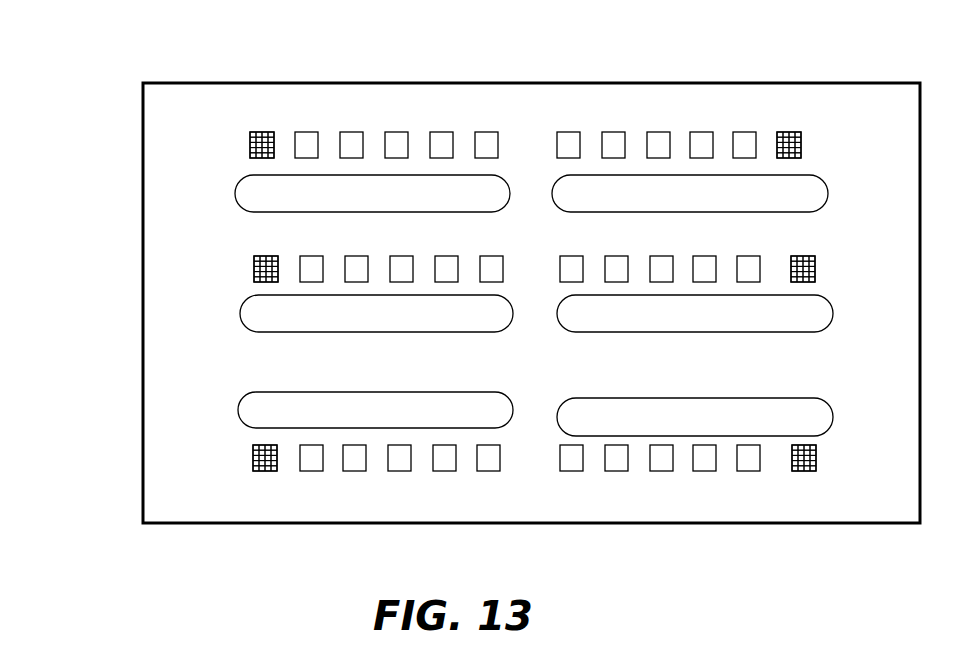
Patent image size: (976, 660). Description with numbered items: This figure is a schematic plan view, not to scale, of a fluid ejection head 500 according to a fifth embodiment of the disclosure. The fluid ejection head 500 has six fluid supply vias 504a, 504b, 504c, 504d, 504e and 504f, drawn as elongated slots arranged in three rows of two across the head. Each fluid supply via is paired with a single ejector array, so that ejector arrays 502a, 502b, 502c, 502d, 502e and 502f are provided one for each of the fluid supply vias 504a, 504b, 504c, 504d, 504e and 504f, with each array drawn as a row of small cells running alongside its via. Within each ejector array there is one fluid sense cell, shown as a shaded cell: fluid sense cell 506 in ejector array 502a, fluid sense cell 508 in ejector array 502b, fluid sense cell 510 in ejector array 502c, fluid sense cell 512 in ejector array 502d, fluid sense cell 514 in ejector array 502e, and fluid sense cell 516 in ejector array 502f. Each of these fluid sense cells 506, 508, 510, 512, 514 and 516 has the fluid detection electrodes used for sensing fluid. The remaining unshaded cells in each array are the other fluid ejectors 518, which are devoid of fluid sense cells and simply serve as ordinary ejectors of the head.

The fluid ejection head 500 is at (102, 106).
The ejector array 502a is at (240, 141).
The ejector array 502b is at (814, 144).
The ejector array 502c is at (243, 269).
The ejector array 502d is at (828, 269).
The ejector array 502e is at (242, 463).
The ejector array 502f is at (828, 458).
The fluid supply via 504a is at (372, 193).
The fluid supply via 504b is at (690, 193).
The fluid supply via 504c is at (376, 313).
The fluid supply via 504d is at (695, 313).
The fluid supply via 504e is at (375, 410).
The fluid supply via 504f is at (695, 417).
The fluid sense cell 506 is at (257, 136).
The fluid sense cell 508 is at (787, 140).
The fluid sense cell 510 is at (259, 262).
The fluid sense cell 512 is at (805, 263).
The fluid sense cell 514 is at (257, 455).
The fluid sense cell 516 is at (814, 462).
The fluid ejector 518 is at (396, 147).